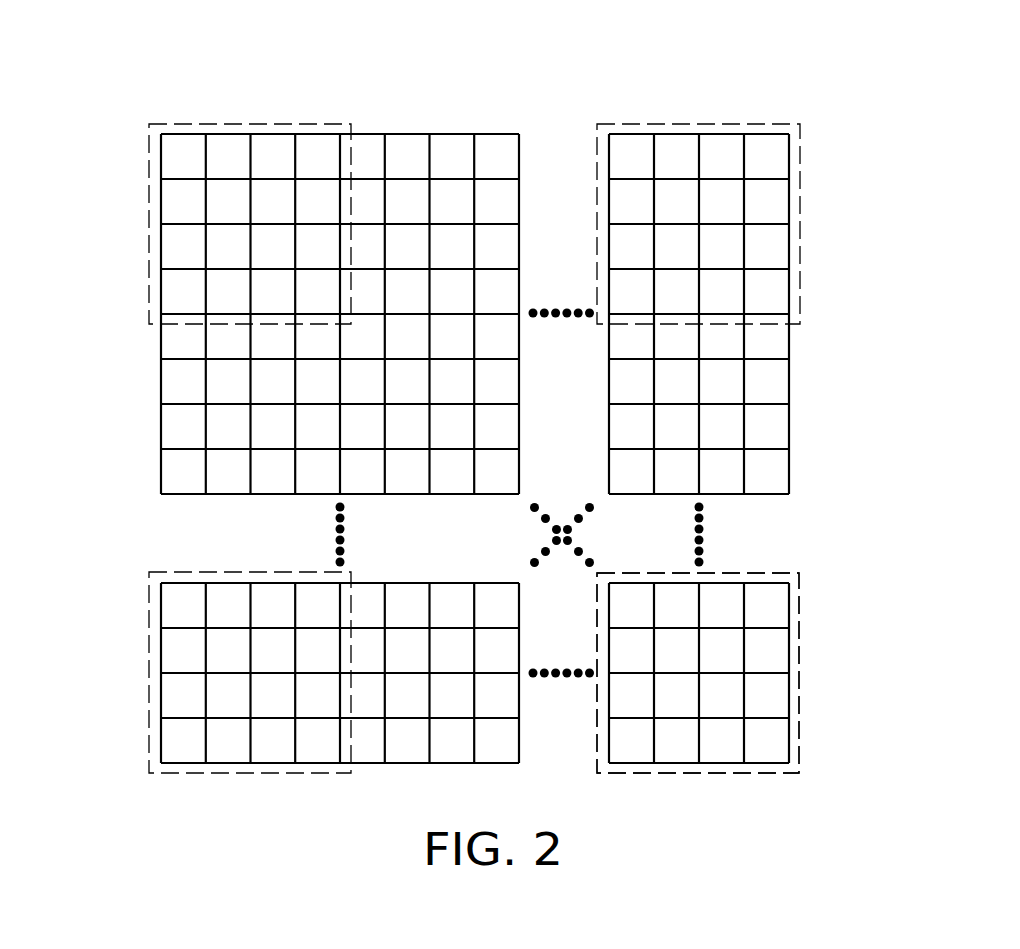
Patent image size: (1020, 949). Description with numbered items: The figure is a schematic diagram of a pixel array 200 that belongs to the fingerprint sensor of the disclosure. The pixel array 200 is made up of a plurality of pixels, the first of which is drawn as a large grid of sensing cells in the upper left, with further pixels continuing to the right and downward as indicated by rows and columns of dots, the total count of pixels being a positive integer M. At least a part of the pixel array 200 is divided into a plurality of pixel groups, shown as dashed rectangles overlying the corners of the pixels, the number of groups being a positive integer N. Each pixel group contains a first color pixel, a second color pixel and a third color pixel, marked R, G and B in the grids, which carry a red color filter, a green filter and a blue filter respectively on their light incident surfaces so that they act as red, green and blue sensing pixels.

The pixel array 200 is at (900, 808).